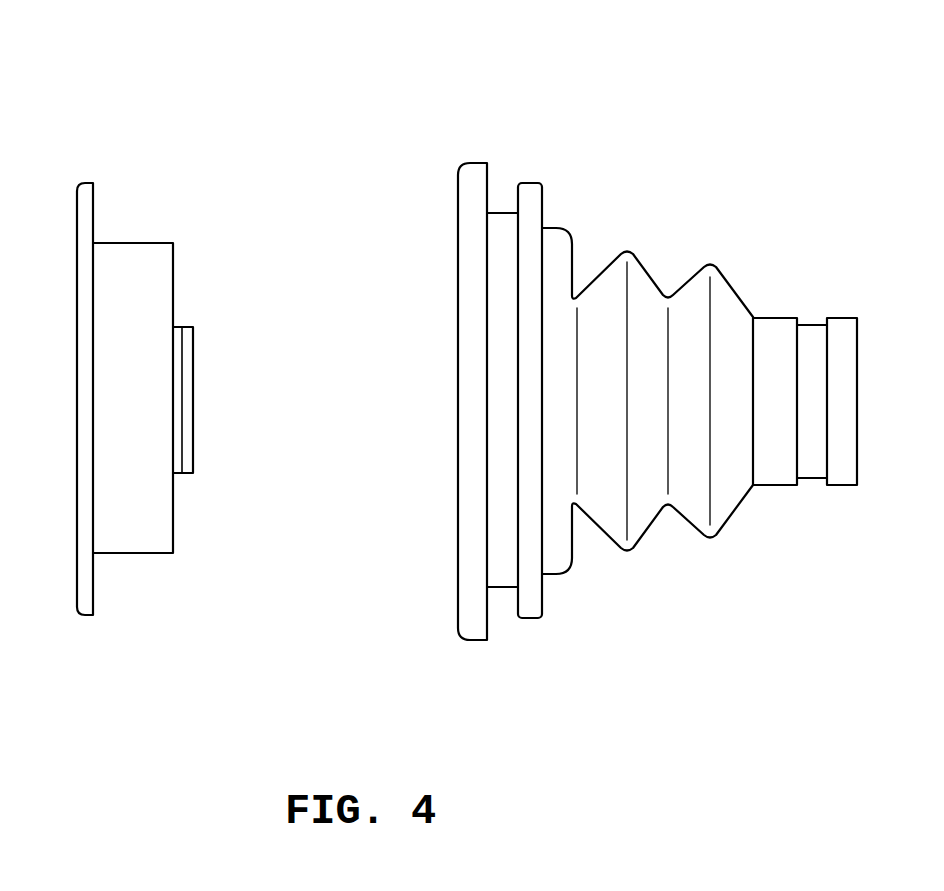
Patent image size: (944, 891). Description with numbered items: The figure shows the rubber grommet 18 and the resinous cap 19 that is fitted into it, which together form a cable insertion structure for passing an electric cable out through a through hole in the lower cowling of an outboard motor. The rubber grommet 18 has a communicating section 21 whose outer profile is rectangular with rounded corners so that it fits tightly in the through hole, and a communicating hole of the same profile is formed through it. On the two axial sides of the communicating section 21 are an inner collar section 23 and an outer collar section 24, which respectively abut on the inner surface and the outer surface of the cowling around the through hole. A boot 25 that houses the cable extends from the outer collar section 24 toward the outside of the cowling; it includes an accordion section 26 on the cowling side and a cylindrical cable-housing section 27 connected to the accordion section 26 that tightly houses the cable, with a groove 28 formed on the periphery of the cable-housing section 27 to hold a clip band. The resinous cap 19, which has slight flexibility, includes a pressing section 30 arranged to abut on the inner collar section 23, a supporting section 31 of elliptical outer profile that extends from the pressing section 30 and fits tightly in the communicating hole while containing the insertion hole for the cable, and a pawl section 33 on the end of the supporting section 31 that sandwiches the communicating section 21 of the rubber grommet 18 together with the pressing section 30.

The rubber grommet 18 is at (857, 77).
The resinous cap 19 is at (152, 120).
The communicating section 21 is at (505, 223).
The inner collar section 23 is at (470, 170).
The outer collar section 24 is at (527, 190).
The boot 25 is at (857, 165).
The accordion section 26 is at (670, 267).
The cylindrical cable-housing section 27 is at (813, 287).
The groove 28 is at (812, 480).
The pressing section 30 is at (88, 182).
The supporting section 31 is at (143, 242).
The pawl section 33 is at (188, 378).